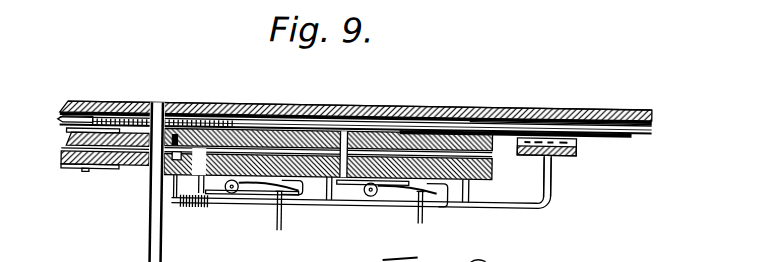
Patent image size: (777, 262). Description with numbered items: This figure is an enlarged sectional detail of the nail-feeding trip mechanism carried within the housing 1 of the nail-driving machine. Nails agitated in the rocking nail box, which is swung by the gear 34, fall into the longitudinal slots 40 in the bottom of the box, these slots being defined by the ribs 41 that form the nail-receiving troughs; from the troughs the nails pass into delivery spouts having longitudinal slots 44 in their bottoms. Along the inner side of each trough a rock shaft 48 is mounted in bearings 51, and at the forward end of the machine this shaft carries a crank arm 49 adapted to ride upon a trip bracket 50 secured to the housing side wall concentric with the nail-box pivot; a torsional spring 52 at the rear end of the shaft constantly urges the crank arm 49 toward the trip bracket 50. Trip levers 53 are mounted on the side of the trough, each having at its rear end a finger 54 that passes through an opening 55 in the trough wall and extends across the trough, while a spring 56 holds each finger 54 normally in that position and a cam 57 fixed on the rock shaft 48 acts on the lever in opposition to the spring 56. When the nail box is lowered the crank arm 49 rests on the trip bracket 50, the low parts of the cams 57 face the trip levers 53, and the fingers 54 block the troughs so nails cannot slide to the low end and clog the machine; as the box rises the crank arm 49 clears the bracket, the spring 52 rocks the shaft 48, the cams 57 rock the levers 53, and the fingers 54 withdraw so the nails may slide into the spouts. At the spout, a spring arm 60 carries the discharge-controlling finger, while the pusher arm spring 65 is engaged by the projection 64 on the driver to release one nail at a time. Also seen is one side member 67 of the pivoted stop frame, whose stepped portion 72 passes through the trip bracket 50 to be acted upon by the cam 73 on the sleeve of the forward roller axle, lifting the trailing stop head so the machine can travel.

The housing 1 is at (447, 104).
The gear 34 is at (205, 112).
The longitudinal slots 40 is at (420, 108).
The ribs 41 is at (333, 117).
The longitudinal slots 44 is at (68, 148).
The rock shaft 48 is at (491, 203).
The crank arm 49 is at (552, 176).
The trip bracket 50 is at (547, 113).
The bearings 51 is at (471, 187).
The torsional spring 52 is at (186, 201).
The trip levers 53 is at (248, 201).
The finger 54 is at (363, 123).
The opening 55 is at (221, 193).
The spring 56 is at (303, 185).
The cam 57 is at (280, 222).
The spring arm 60 is at (90, 118).
The projection 64 is at (233, 117).
The pusher arm spring 65 is at (62, 167).
The side member 67 is at (482, 111).
The stepped portion 72 is at (528, 124).
The cam 73 is at (133, 166).